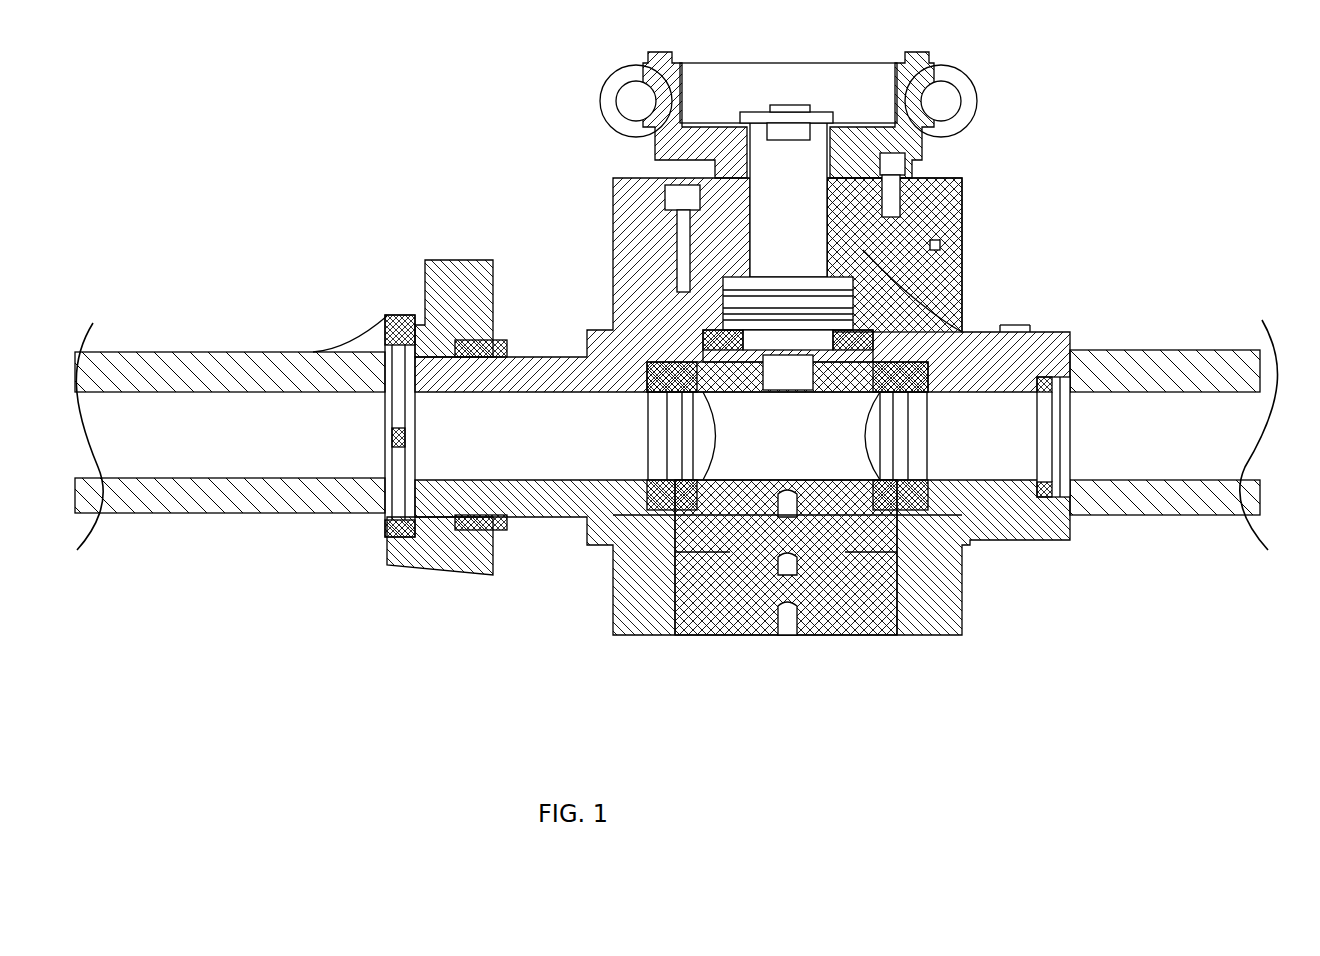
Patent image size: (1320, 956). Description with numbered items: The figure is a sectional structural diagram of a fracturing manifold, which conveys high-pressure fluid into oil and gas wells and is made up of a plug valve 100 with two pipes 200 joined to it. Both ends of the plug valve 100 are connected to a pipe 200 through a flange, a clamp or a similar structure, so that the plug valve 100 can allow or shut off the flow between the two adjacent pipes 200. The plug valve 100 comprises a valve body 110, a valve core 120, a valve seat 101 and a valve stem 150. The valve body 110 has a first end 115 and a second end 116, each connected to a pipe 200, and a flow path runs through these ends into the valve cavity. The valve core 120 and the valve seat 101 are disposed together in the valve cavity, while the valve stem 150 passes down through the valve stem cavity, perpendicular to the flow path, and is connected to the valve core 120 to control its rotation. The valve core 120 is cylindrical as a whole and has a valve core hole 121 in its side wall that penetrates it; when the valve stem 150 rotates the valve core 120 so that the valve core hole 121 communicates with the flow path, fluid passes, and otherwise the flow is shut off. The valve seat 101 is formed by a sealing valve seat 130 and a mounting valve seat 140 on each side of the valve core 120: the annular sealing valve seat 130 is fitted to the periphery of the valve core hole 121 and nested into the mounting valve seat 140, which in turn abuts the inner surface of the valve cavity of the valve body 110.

The plug valve 100 is at (1050, 191).
The valve body 110 is at (617, 312).
The first end 115 is at (440, 368).
The second end 116 is at (1053, 350).
The valve core 120 is at (850, 377).
The valve core hole 121 is at (720, 436).
The sealing valve seat 130 is at (695, 505).
The mounting valve seat 140 is at (690, 495).
The valve seat 101 is at (548, 587).
The valve stem 150 is at (802, 212).
The pipe 200 is at (278, 492).